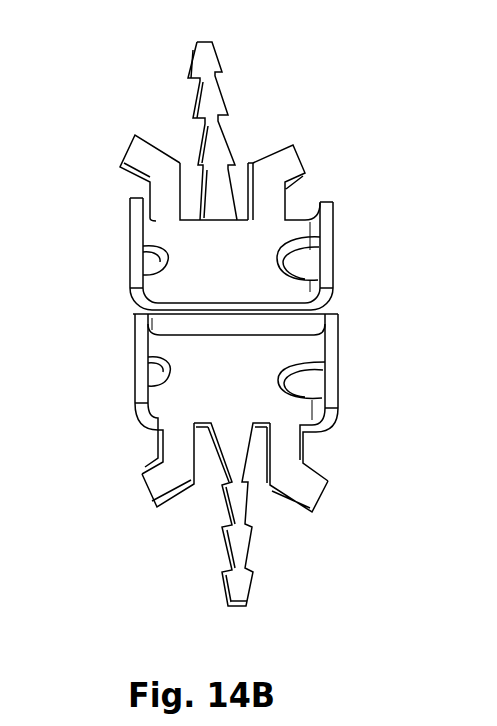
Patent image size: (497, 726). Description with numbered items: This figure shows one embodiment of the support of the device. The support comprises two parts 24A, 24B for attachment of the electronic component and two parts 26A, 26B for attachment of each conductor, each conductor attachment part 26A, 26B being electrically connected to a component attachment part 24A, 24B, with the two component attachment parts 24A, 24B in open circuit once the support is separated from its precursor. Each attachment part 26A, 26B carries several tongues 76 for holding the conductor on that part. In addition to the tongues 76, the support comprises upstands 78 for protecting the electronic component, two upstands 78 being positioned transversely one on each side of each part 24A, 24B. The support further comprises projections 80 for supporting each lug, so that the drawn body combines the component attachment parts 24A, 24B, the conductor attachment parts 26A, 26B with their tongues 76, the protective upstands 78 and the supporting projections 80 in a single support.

The part for attachment of the electronic component 24A is at (252, 355).
The part for attachment of the electronic component 24B is at (238, 258).
The part for attachment of a conductor 26A is at (217, 518).
The part for attachment of a conductor 26B is at (188, 100).
The tongue 76 is at (218, 74).
The upstand 78 is at (337, 222).
The projection 80 is at (143, 153).